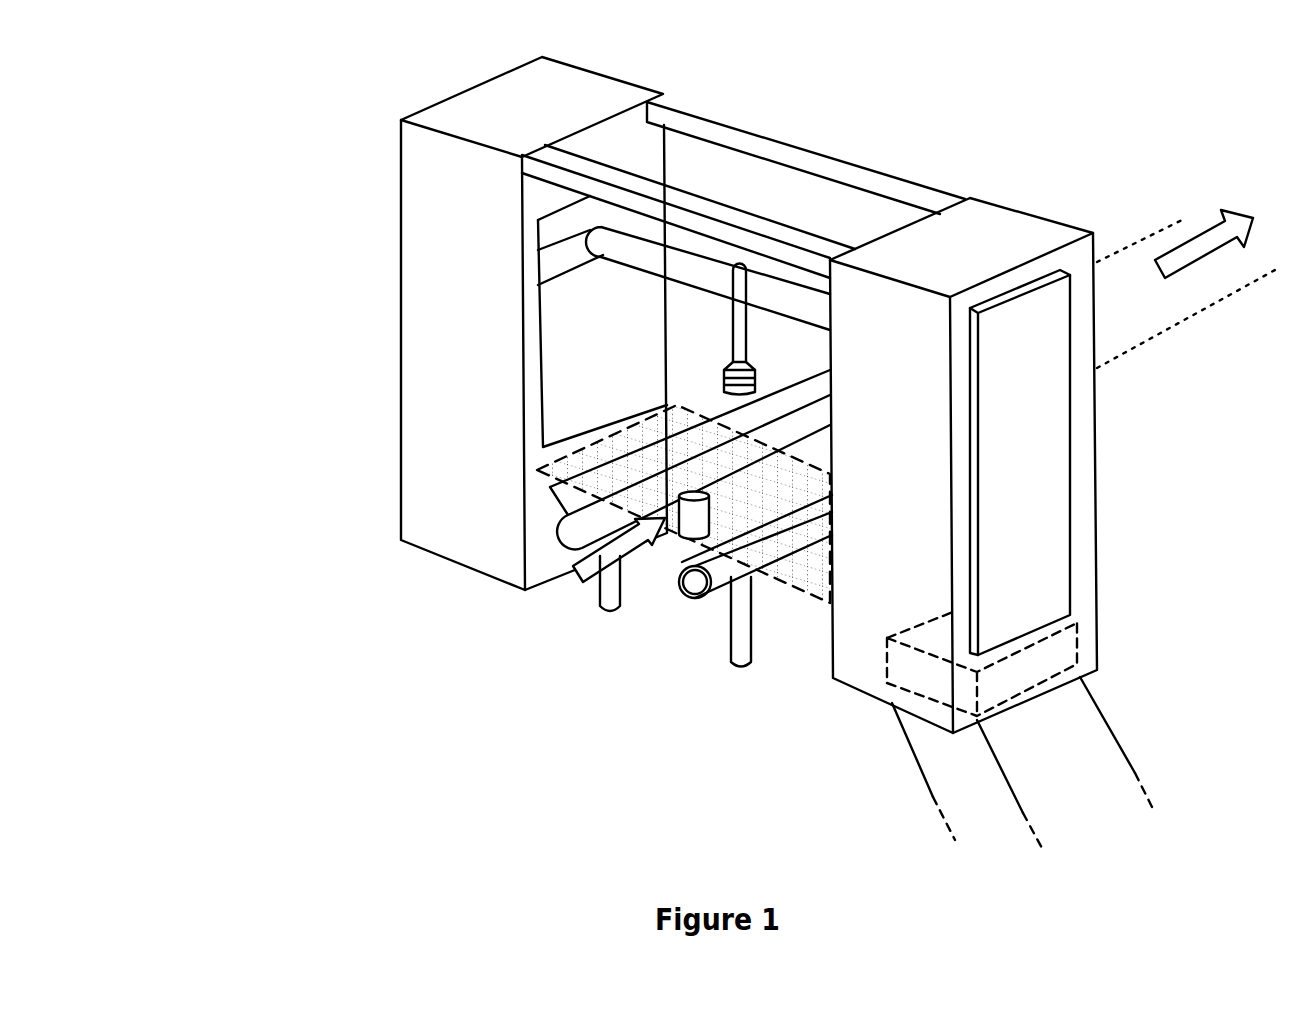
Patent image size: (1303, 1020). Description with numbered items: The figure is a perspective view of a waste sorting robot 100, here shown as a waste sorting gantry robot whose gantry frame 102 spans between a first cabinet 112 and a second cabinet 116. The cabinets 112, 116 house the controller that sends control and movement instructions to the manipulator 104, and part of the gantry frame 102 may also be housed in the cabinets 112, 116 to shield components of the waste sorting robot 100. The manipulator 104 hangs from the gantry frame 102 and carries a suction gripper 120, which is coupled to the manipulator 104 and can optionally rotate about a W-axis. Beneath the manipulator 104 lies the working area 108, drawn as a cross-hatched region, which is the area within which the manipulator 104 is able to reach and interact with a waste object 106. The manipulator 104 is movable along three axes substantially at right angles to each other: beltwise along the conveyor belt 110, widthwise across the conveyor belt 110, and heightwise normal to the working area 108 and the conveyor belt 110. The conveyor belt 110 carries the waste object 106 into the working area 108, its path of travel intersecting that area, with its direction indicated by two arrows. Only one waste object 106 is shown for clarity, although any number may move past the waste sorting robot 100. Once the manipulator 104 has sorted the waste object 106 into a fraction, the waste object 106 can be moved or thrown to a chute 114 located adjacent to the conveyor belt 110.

The waste sorting robot 100 is at (266, 266).
The gantry frame 102 is at (732, 113).
The manipulator 104 is at (733, 285).
The waste object 106 is at (688, 538).
The working area 108 is at (776, 562).
The conveyor belt 110 is at (678, 583).
The first cabinet 112 is at (401, 345).
The chute 114 is at (920, 775).
The second cabinet 116 is at (1097, 473).
The suction gripper 120 is at (726, 370).